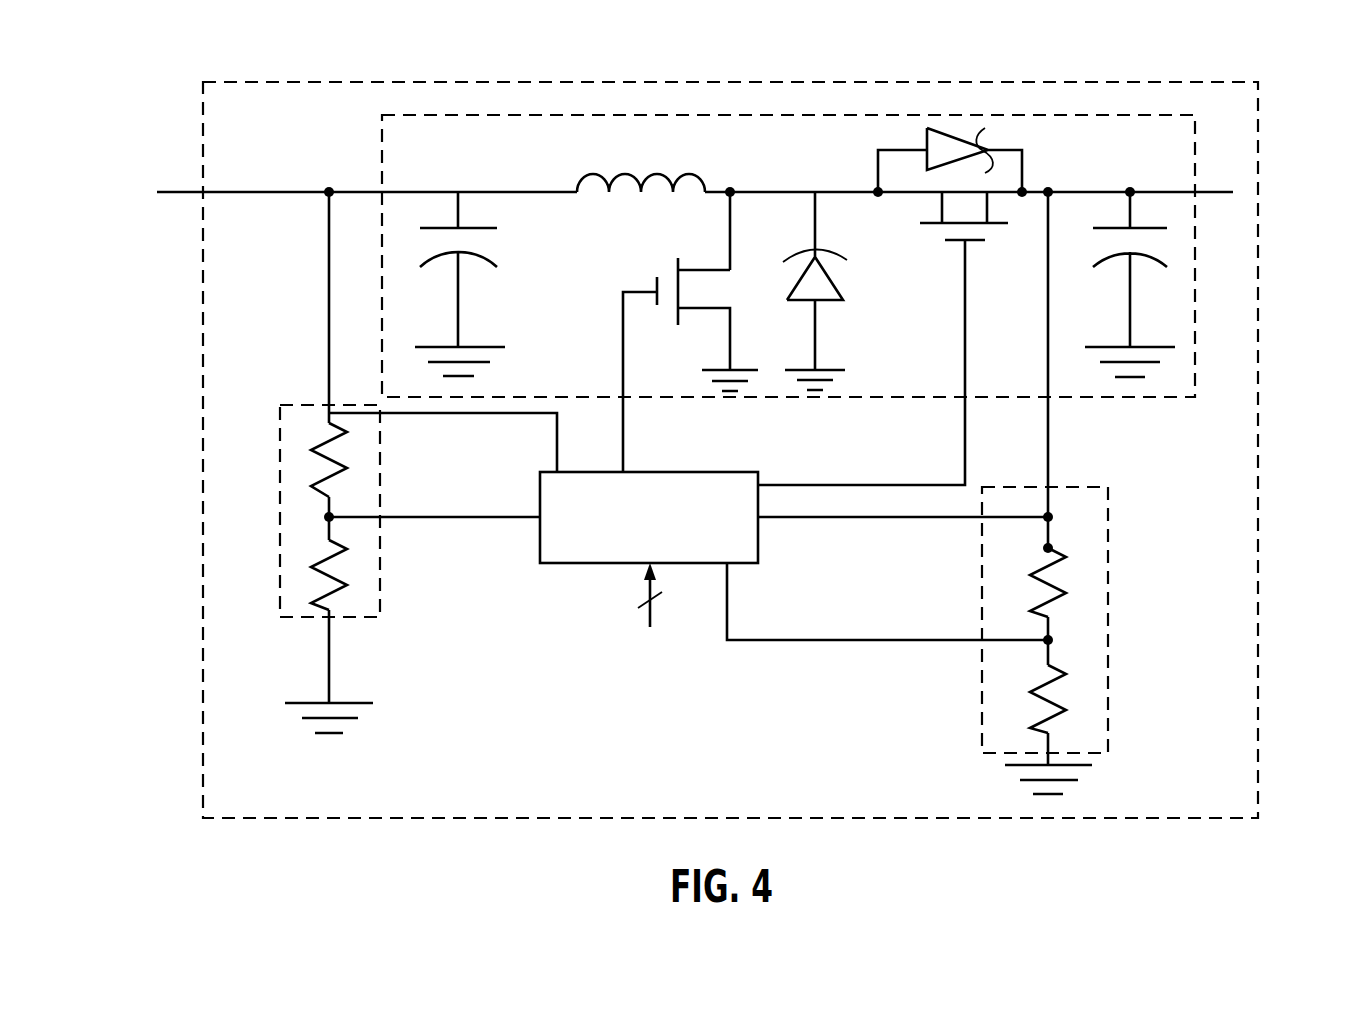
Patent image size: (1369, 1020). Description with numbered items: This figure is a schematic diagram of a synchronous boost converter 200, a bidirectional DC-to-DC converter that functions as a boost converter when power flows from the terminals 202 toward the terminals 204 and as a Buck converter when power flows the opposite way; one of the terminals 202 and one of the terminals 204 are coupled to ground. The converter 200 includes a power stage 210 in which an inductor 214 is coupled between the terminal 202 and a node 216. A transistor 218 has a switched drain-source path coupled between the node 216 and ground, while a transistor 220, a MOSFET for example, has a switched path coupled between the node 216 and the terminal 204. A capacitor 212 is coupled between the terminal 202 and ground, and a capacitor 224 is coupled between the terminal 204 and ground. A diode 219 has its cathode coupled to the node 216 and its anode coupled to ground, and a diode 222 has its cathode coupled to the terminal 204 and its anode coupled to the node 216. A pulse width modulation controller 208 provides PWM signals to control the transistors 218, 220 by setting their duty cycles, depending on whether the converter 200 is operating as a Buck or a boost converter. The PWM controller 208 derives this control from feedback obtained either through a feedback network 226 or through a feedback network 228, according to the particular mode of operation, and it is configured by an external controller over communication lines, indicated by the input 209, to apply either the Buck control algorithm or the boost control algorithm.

The synchronous boost converter 200 is at (965, 820).
The terminals 202 is at (290, 192).
The terminals 204 is at (1197, 193).
The pulse width modulation (PWM) controller 208 is at (540, 552).
The control input signal 209 is at (650, 627).
The power stage 210 is at (1197, 297).
The capacitor 212 is at (483, 260).
The inductor 214 is at (583, 175).
The node 216 is at (732, 188).
The transistor 218 is at (657, 278).
The diode 219 is at (833, 280).
The transistor 220 is at (940, 208).
The diode 222 is at (960, 137).
The capacitor 224 is at (1150, 229).
The feedback network 226 is at (982, 698).
The feedback network 228 is at (316, 402).